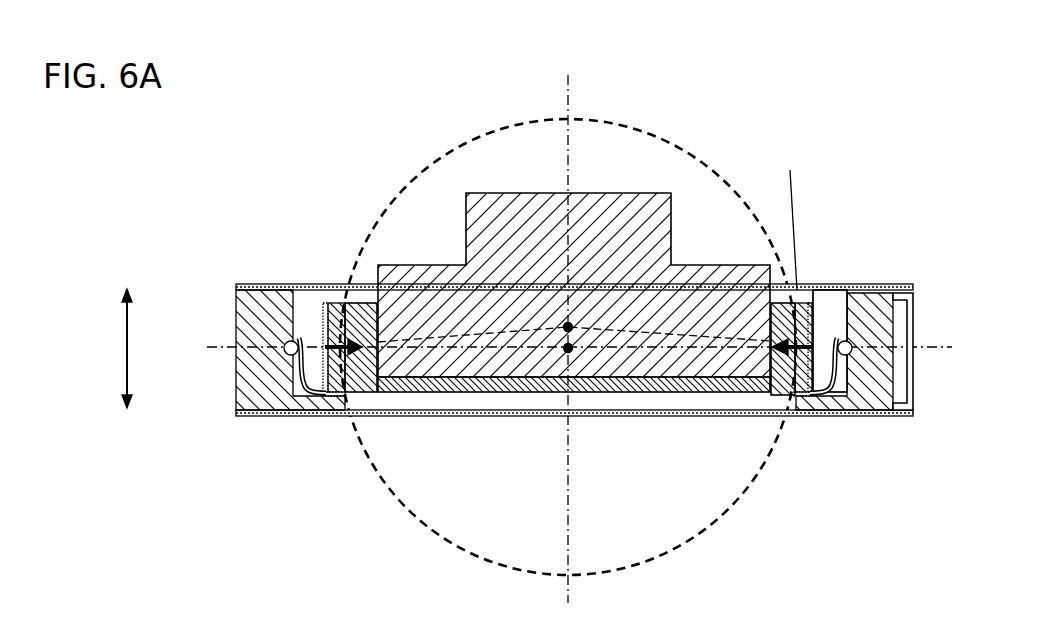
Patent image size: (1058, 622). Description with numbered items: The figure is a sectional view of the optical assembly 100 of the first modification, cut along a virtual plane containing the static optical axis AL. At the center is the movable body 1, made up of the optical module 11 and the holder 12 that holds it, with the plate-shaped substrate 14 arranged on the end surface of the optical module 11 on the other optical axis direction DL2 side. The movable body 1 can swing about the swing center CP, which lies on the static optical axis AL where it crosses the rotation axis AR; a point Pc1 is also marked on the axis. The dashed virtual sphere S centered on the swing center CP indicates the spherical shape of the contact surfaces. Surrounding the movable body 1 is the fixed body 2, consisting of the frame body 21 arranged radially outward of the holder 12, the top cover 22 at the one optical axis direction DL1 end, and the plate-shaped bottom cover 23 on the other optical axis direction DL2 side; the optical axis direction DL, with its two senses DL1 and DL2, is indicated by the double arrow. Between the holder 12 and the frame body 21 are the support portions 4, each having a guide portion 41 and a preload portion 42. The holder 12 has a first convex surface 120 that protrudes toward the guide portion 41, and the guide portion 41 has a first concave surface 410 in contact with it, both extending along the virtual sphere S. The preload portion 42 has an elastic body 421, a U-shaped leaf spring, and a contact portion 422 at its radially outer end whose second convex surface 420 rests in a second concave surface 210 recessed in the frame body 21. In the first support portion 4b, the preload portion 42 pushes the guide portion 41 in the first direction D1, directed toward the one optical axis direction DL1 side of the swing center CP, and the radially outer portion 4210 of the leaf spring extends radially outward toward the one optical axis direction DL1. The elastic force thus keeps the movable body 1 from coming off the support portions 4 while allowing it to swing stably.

The optical assembly 100 is at (275, 132).
The movable body 1 is at (570, 311).
The optical module 11 is at (514, 204).
The holder 12 is at (357, 303).
The substrate 14 is at (655, 392).
The fixed body 2 is at (533, 348).
The frame body 21 is at (267, 350).
The top cover 22 is at (268, 285).
The bottom cover 23 is at (268, 414).
The support portion 4 is at (845, 291).
The guide portion 41 is at (792, 216).
The preload portion 42 is at (854, 276).
The elastic body 421 is at (818, 290).
The contact portion 422 is at (880, 300).
The first support portion 4b is at (836, 290).
The first concave surface 410 is at (720, 393).
The second convex surface 420 is at (886, 408).
The second concave surface 210 is at (832, 410).
The first convex surface 120 is at (813, 405).
The radially outer portion 4210 is at (300, 385).
The static optical axis AL is at (597, 337).
The rotation axis AR is at (583, 350).
The virtual sphere S is at (395, 497).
The rotation center point Pc1 is at (577, 320).
The swing center CP is at (572, 352).
The first direction D1 is at (333, 302).
The optical axis direction DL is at (109, 348).
The one optical axis direction DL1 is at (128, 274).
The other optical axis direction DL2 is at (128, 425).